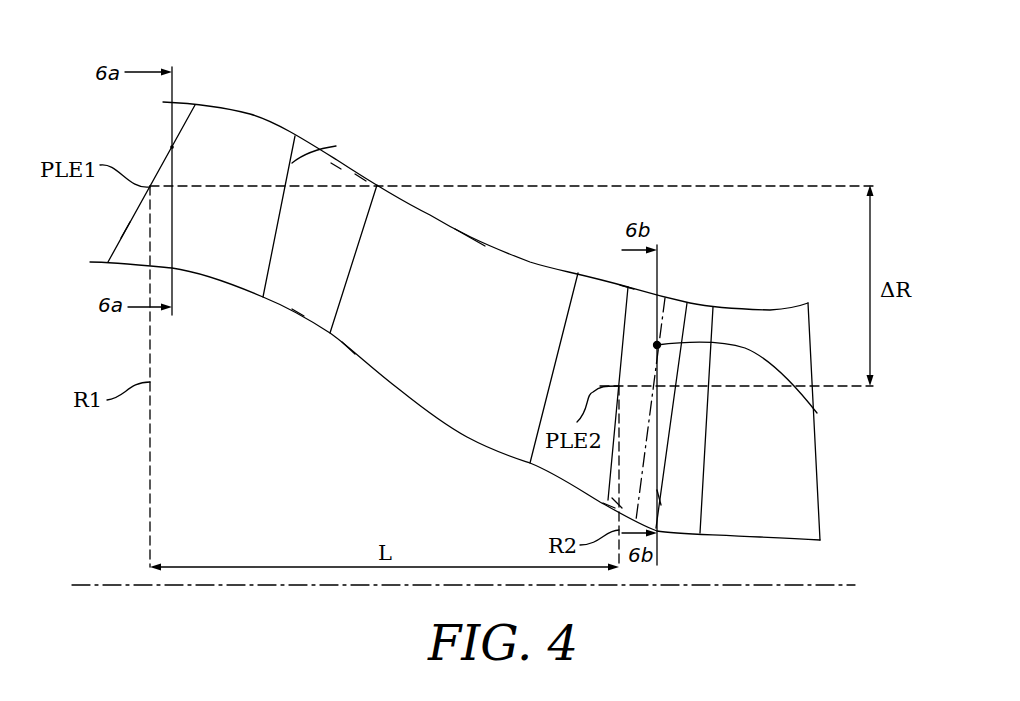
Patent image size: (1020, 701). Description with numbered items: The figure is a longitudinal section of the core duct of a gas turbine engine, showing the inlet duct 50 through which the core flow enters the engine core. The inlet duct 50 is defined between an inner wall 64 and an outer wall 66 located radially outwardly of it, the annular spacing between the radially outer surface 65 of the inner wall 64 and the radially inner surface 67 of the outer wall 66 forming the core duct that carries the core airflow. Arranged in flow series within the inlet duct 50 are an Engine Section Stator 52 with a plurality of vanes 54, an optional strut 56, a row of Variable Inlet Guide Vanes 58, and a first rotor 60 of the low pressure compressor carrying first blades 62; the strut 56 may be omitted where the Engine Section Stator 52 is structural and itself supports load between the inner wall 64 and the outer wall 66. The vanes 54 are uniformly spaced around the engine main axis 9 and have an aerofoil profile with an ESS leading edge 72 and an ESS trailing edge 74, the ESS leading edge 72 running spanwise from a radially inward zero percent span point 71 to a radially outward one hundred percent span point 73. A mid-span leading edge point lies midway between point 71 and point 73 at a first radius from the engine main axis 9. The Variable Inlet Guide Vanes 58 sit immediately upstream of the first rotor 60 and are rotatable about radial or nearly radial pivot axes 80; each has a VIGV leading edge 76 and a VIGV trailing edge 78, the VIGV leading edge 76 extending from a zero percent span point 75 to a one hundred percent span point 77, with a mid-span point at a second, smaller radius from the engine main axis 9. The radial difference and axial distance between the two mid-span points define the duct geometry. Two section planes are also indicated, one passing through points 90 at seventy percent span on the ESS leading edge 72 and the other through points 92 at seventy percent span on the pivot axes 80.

The engine main axis 9 is at (97, 585).
The inlet duct 50 is at (474, 133).
The Engine Section Stator 52 is at (255, 101).
The vanes 54 is at (294, 234).
The strut 56 is at (514, 368).
The Variable Inlet Guide Vanes 58 is at (636, 403).
The first rotor 60 is at (792, 263).
The first blades 62 is at (737, 420).
The inner wall 64 is at (348, 348).
The radially outer surface 65 is at (298, 292).
The outer wall 66 is at (360, 177).
The radially inner surface 67 is at (330, 176).
The 0% span ESS leading edge point 71 is at (108, 262).
The ESS leading edge 72 is at (125, 230).
The 100% span ESS leading edge point 73 is at (195, 105).
The ESS trailing edge 74 is at (318, 152).
The 0% span VIGV leading edge point 75 is at (618, 503).
The VIGV leading edge 76 is at (609, 500).
The 100% span VIGV leading edge point 77 is at (628, 287).
The VIGV trailing edge 78 is at (687, 323).
The pivot axes 80 is at (663, 497).
The 70% span ESS leading edge points 90 is at (172, 147).
The 70% span VIGV pivot axis points 92 is at (817, 413).